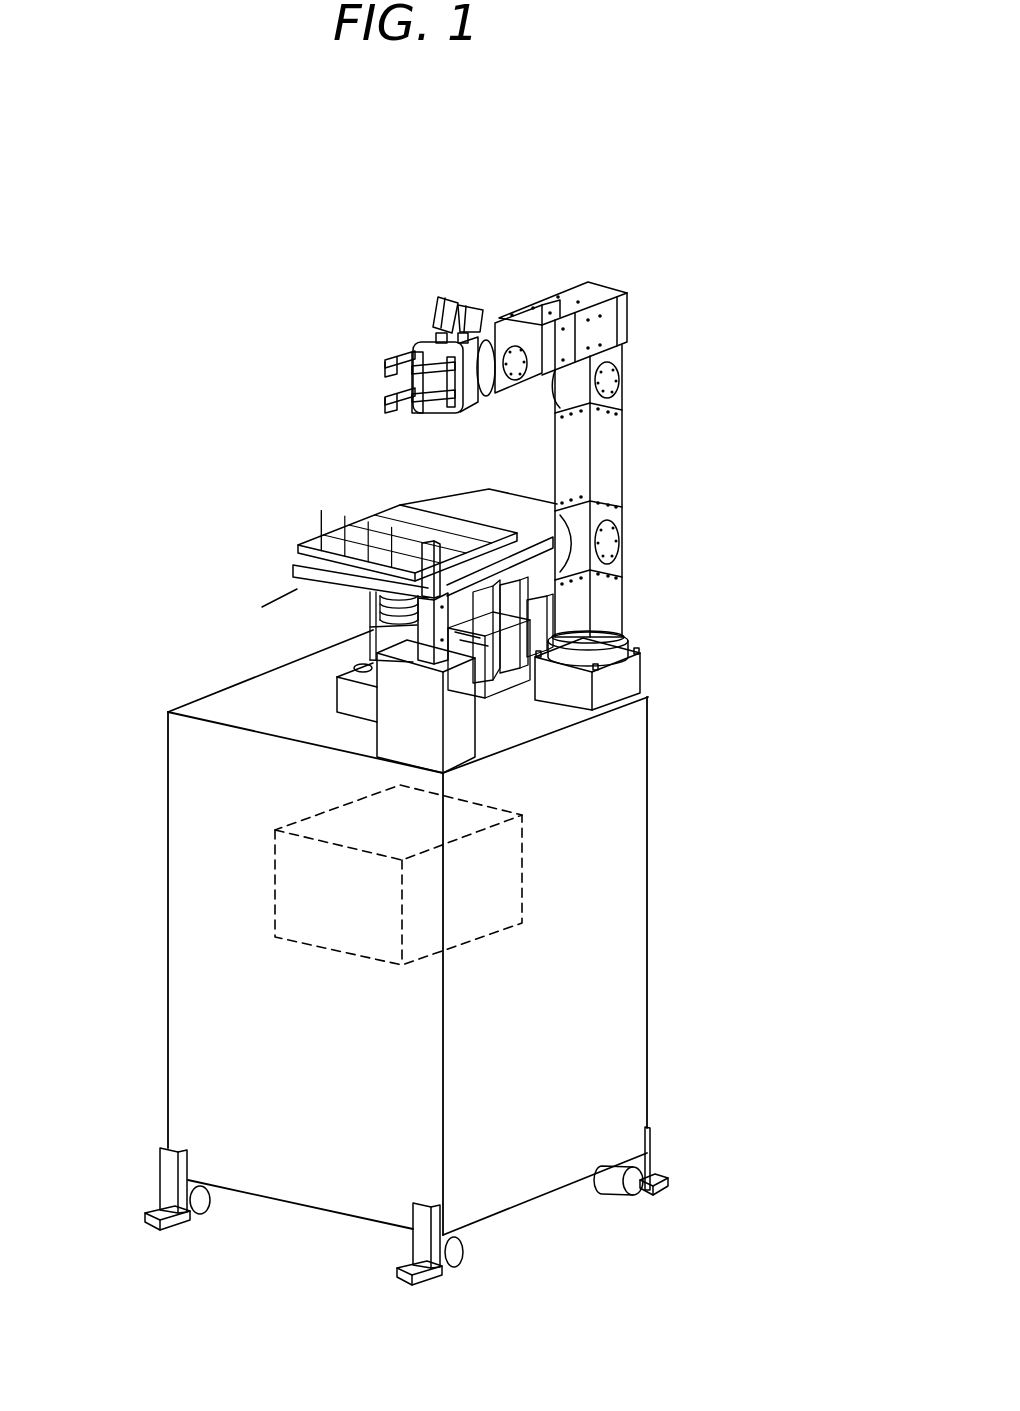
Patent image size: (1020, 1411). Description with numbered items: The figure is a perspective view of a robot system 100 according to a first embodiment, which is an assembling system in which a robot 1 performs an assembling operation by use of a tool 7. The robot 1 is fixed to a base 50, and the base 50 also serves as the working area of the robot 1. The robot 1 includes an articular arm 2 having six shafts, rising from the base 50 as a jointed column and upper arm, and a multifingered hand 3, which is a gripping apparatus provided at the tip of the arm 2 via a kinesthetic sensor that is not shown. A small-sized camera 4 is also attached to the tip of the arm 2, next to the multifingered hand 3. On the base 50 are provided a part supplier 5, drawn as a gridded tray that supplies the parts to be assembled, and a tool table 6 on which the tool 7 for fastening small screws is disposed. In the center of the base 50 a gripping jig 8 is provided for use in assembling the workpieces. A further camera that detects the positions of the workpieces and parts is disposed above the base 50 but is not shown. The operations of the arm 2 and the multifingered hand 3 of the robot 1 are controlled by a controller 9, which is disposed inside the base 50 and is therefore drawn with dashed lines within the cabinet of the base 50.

The robot system 100 is at (576, 199).
The robot 1 is at (648, 304).
The articular arm 2 is at (612, 445).
The multifingered hand 3 is at (392, 358).
The small-sized camera 4 is at (478, 300).
The part supplier 5 is at (375, 515).
The tool table 6 is at (387, 737).
The tool 7 is at (427, 582).
The gripping jig 8 is at (337, 697).
The controller 9 is at (460, 893).
The base 50 is at (590, 830).